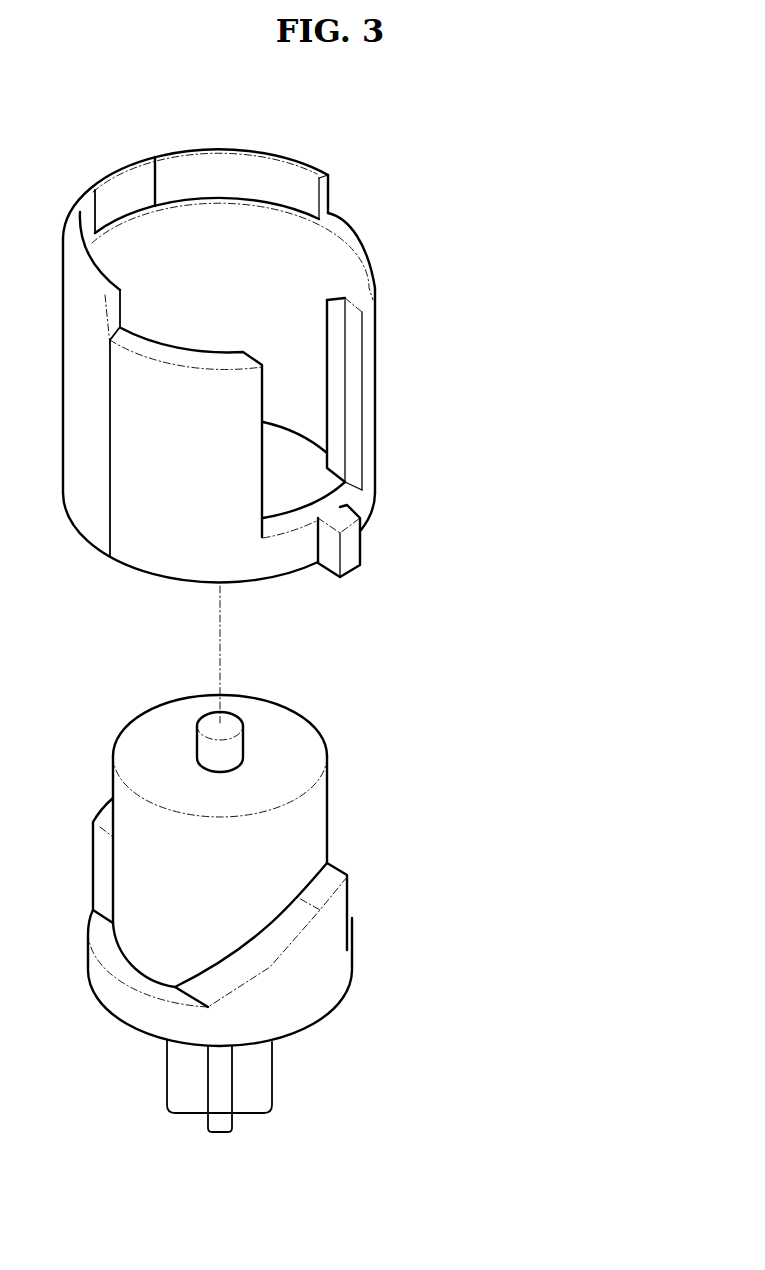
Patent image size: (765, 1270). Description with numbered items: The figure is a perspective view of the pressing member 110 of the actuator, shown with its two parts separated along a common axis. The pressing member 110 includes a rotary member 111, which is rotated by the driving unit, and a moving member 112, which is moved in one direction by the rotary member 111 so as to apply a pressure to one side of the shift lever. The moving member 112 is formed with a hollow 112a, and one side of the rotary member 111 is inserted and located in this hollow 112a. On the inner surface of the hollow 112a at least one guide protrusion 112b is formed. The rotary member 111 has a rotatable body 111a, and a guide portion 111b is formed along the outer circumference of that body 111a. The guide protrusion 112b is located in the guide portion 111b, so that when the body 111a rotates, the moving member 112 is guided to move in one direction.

The pressing member 110 is at (342, 640).
The rotary member 111 is at (313, 859).
The rotatable body 111a is at (280, 742).
The guide portion 111b is at (283, 965).
The moving member 112 is at (308, 365).
The hollow 112a is at (258, 258).
The guide protrusion 112b is at (330, 394).